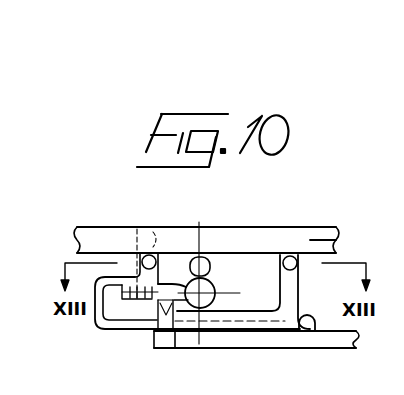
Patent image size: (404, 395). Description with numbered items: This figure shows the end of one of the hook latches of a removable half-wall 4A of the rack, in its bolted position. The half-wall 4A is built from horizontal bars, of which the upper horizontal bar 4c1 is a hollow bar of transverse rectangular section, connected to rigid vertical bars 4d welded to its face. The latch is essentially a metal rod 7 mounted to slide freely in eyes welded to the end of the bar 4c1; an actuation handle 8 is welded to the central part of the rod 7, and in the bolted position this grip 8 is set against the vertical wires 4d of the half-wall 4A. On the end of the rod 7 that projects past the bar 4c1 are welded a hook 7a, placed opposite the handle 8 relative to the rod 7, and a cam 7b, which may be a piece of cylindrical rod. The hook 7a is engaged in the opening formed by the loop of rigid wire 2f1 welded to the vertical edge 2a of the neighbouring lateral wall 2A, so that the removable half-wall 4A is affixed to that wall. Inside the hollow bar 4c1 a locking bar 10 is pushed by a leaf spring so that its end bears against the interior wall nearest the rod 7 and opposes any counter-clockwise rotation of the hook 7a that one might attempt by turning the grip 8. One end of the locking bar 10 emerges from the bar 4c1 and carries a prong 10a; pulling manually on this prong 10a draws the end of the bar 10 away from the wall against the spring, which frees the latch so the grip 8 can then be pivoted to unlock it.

The lateral wall 2A is at (289, 210).
The vertical edge of lateral wall 2a is at (318, 238).
The prong 10a is at (149, 233).
The cam 7b is at (207, 257).
The metal rod 7 is at (212, 292).
The loop of rigid wire 2f1 is at (292, 292).
The removable wall part 4A is at (101, 335).
The upper horizontal bar 4c1 is at (92, 327).
The hook 7a is at (132, 286).
The locking bar 10 is at (173, 334).
The actuation handle 8 is at (300, 333).
The rigid vertical bars 4d is at (341, 344).